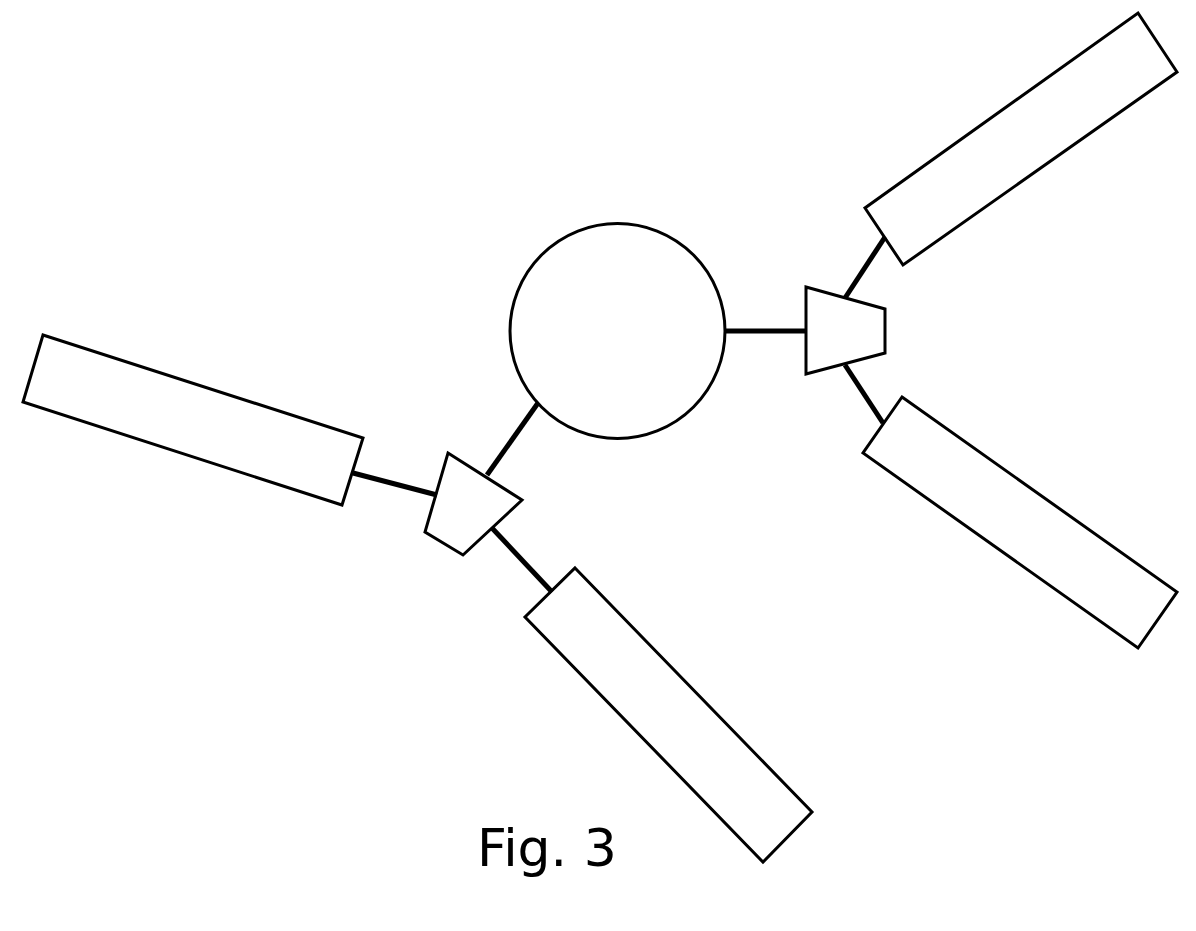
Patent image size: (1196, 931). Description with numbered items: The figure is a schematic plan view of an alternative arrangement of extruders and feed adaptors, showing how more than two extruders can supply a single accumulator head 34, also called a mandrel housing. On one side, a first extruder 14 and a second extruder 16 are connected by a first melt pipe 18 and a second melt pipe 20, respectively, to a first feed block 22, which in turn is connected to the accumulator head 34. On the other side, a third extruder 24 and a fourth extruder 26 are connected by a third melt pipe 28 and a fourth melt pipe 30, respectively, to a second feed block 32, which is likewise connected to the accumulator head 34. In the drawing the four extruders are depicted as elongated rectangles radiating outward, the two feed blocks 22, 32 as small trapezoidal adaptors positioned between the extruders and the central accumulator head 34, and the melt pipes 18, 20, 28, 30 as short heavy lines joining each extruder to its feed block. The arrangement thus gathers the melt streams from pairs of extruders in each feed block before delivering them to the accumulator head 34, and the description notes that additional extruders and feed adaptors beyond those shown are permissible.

The first extruder 14 is at (175, 435).
The second extruder 16 is at (598, 683).
The first melt pipe 18 is at (398, 478).
The second melt pipe 20 is at (523, 558).
The first feed block 22 is at (443, 542).
The third extruder 24 is at (1057, 527).
The fourth extruder 26 is at (1023, 160).
The third melt pipe 28 is at (863, 400).
The fourth melt pipe 30 is at (863, 263).
The second feed block 32 is at (877, 328).
The accumulator head 34 is at (617, 427).